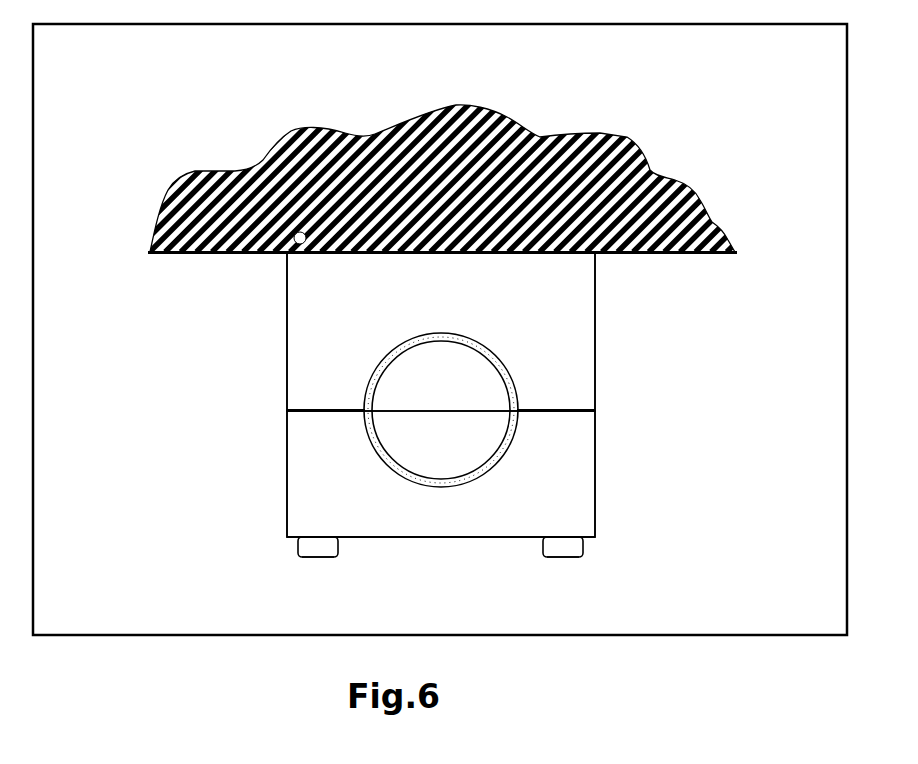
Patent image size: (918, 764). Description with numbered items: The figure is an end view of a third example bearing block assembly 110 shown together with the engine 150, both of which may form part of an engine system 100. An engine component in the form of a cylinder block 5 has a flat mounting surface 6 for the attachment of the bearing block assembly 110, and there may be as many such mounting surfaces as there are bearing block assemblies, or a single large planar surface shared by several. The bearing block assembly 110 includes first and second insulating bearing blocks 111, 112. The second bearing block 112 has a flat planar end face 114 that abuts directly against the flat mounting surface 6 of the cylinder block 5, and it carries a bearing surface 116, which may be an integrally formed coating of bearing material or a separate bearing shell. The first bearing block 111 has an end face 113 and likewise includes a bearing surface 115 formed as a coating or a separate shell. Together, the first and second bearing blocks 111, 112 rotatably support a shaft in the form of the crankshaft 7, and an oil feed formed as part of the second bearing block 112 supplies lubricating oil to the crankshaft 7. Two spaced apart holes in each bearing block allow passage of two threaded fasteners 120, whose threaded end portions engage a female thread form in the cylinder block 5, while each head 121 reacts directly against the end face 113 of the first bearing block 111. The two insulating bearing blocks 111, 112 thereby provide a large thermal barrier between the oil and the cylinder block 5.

The cylinder block 5 is at (198, 166).
The flat mounting surface 6 is at (193, 255).
The crankshaft 7 is at (517, 382).
The engine system 100 is at (73, 101).
The bearing block assembly 110 is at (604, 483).
The first bearing block 111 is at (287, 478).
The second bearing block 112 is at (287, 338).
The end face 113 is at (427, 537).
The flat planar end face 114 is at (294, 244).
The bearing surface 115 is at (517, 428).
The bearing surface 116 is at (493, 353).
The threaded fastener 120 is at (290, 559).
The head 121 is at (317, 557).
The engine 150 is at (38, 24).